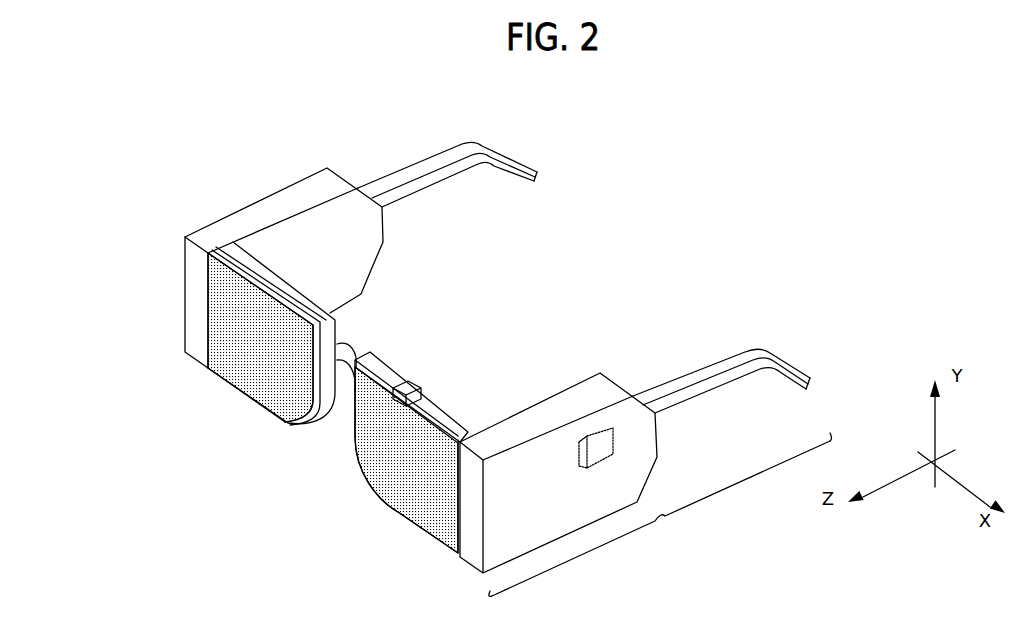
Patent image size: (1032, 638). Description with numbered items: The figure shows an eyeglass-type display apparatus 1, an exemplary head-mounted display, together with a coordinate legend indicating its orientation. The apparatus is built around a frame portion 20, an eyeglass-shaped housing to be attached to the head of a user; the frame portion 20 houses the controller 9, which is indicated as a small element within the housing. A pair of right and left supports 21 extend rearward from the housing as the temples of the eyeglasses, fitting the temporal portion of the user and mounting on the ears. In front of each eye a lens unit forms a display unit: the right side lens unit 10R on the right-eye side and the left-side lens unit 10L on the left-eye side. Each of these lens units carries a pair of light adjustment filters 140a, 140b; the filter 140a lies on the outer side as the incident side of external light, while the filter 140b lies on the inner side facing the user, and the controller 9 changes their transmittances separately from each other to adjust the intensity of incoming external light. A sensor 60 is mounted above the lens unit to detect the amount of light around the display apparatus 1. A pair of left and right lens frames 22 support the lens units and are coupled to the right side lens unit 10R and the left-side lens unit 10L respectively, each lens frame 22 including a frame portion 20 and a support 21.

The display apparatus 1 is at (131, 224).
The frame portion 20 is at (260, 197).
The support 21 is at (418, 160).
The right side lens unit 10R is at (280, 278).
The left-side lens unit 10L is at (457, 410).
The light adjustment filter 140a is at (262, 372).
The light adjustment filter 140b is at (320, 414).
The sensor 60 is at (423, 383).
The controller 9 is at (613, 453).
The lens frame 22 is at (660, 514).